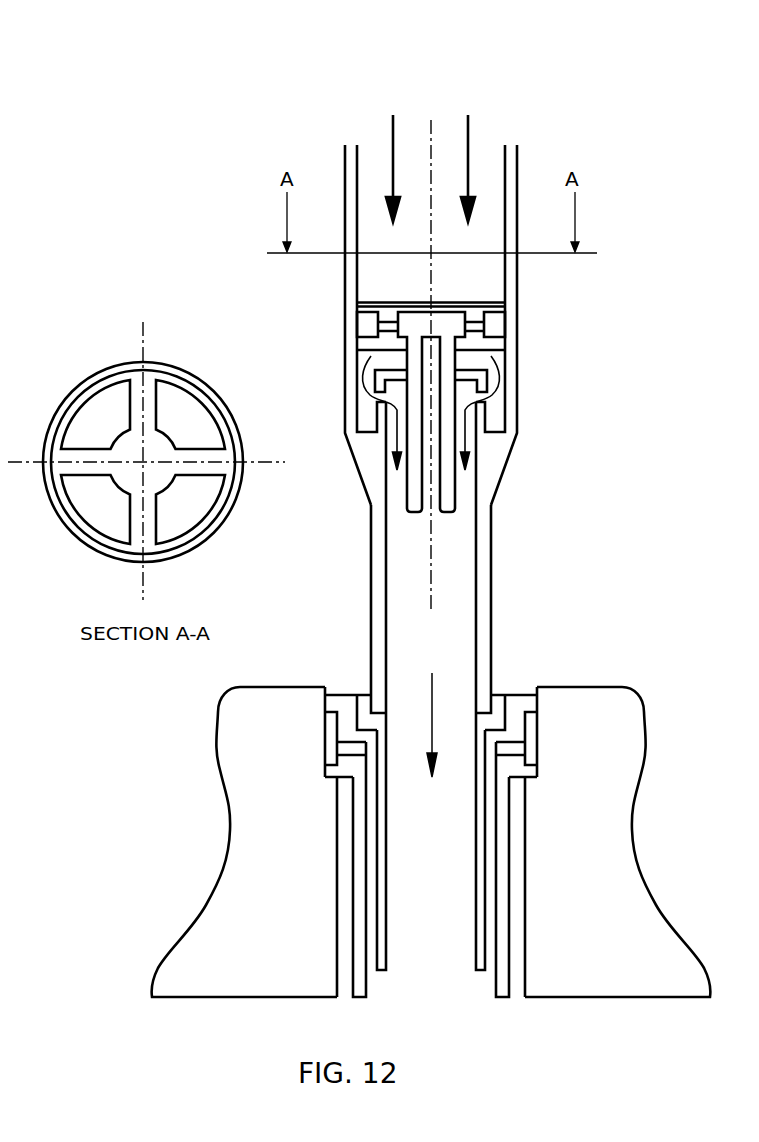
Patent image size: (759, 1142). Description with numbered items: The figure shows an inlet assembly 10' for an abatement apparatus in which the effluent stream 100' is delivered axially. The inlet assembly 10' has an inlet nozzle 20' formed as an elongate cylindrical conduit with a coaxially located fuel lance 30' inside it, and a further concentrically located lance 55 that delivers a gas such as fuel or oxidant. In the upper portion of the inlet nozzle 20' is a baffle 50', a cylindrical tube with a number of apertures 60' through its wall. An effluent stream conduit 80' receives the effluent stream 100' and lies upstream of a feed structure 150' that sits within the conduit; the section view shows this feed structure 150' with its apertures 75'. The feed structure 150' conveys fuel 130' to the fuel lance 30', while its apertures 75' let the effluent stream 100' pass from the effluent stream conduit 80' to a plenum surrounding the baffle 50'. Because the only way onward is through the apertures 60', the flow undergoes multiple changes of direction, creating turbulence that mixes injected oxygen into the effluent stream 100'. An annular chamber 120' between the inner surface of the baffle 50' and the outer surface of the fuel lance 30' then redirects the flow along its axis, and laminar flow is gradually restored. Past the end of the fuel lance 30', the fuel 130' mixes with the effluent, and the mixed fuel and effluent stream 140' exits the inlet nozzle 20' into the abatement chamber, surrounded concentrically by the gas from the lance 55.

The inlet assembly 10' is at (81, 54).
The effluent stream 100' is at (430, 149).
The effluent stream conduit 80' is at (387, 325).
The fuel 130' is at (481, 397).
The apertures 60' is at (474, 410).
The annular chamber 120' is at (534, 457).
The fuel lance 30' is at (391, 686).
The baffle 50' is at (534, 510).
The inlet nozzle 20' is at (412, 630).
The mixed fuel and effluent stream 140' is at (465, 811).
The lance 55 is at (505, 913).
The feed structure 150' is at (138, 442).
The apertures 75' is at (131, 487).